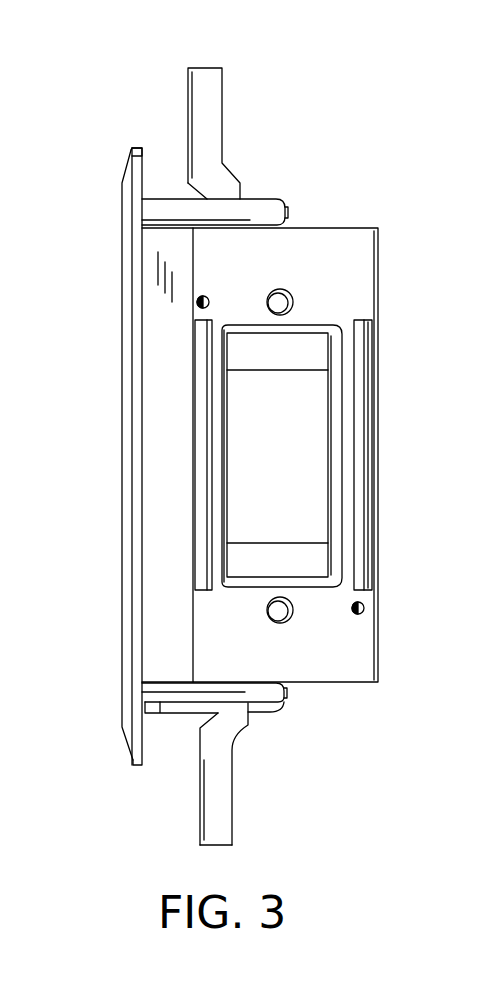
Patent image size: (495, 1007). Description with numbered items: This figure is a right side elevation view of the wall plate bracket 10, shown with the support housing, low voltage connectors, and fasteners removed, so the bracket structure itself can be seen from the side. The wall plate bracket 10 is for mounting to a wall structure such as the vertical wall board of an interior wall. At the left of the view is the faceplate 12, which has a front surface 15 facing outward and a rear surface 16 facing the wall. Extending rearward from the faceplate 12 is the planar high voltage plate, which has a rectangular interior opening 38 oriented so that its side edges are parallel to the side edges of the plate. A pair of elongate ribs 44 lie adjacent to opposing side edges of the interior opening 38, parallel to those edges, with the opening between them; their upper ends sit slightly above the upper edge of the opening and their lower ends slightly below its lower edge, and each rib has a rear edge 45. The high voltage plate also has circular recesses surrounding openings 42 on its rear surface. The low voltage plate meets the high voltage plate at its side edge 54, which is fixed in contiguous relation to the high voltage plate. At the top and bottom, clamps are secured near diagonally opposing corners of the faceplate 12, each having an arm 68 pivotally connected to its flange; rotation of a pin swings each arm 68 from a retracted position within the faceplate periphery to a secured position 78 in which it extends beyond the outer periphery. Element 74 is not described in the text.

The wall plate bracket 10 is at (359, 229).
The faceplate 12 is at (118, 392).
The front surface 15 is at (120, 495).
The rear surface 16 is at (143, 167).
The interior opening 38 is at (223, 477).
The openings 42 is at (292, 296).
The elongate ribs 44 is at (199, 527).
The rear edge 45 is at (203, 402).
The side edge 54 is at (377, 607).
The arm 68 is at (188, 108).
The lower tab 74 is at (232, 772).
The secured position 78 is at (222, 146).